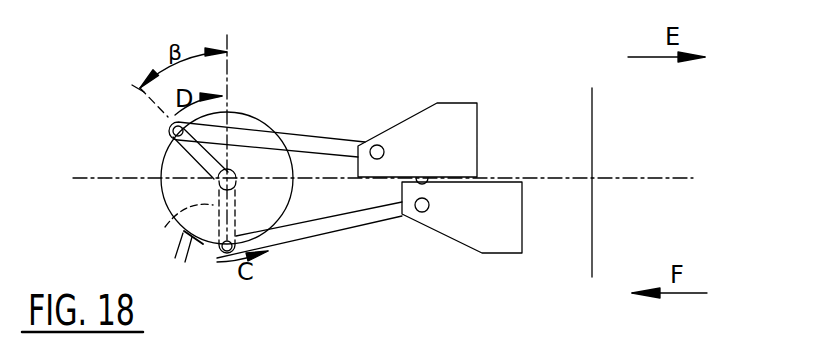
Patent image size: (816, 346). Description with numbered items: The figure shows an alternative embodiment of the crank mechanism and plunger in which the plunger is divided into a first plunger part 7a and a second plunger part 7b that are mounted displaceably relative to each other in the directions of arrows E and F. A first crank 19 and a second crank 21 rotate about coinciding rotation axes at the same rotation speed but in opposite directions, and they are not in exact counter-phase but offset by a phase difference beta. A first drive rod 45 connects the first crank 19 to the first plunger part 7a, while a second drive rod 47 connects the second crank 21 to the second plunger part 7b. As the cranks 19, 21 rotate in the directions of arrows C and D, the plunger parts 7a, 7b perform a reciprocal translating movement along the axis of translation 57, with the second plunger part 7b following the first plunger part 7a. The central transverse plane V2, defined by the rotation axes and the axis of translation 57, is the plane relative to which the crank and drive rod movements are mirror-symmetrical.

The first plunger part 7a is at (488, 223).
The second plunger part 7b is at (463, 140).
The first crank 19 is at (163, 224).
The second crank 21 is at (197, 150).
The first drive rod 45 is at (340, 222).
The second drive rod 47 is at (322, 149).
The axis of translation 57 is at (677, 177).
The central transverse plane V2 is at (93, 178).